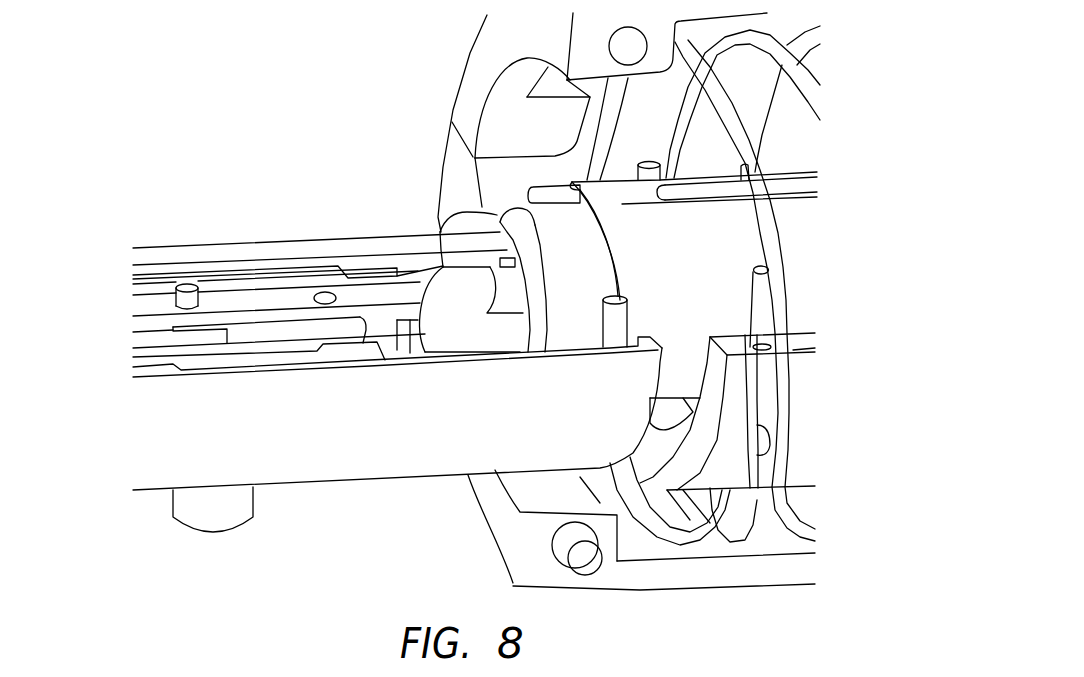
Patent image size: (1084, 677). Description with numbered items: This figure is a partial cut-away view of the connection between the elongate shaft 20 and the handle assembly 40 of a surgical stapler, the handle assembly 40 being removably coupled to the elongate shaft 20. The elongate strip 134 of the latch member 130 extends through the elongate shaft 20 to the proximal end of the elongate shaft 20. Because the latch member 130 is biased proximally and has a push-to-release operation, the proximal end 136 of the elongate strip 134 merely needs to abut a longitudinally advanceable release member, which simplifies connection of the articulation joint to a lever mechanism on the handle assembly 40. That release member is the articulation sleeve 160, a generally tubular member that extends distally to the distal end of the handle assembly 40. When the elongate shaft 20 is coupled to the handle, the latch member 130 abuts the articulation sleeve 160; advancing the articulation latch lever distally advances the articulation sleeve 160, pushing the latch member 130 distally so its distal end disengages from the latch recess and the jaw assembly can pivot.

The elongate shaft 20 is at (361, 471).
The handle assembly 40 is at (527, 486).
The latch member 130 is at (192, 257).
The elongate strip 134 is at (288, 160).
The proximal end 136 is at (433, 215).
The articulation sleeve 160 is at (595, 270).